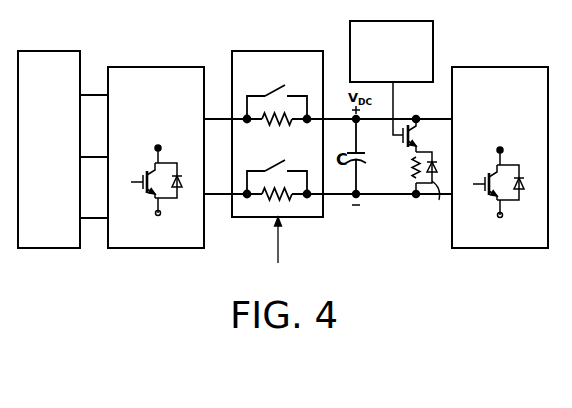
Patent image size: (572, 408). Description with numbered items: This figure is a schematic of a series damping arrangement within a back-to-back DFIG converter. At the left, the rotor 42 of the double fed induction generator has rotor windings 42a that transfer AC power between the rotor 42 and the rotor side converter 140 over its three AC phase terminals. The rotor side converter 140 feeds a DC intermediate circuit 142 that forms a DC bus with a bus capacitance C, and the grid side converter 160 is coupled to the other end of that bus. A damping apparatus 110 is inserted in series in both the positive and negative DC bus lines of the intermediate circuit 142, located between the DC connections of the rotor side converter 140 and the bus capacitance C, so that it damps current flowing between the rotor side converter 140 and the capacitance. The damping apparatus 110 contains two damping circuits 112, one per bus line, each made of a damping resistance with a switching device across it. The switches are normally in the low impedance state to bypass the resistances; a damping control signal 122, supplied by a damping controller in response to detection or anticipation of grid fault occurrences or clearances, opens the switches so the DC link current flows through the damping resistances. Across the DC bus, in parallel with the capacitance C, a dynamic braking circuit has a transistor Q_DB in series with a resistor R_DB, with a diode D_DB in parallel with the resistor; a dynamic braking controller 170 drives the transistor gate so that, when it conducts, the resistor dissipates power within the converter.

The rotor 42 is at (48, 51).
The rotor windings 42a is at (95, 52).
The rotor side converter 140 is at (158, 66).
The DC intermediate circuit 142 is at (213, 55).
The damping apparatus 110 is at (281, 51).
The damping circuits 112 is at (250, 91).
The damping control signal 122 is at (278, 251).
The dynamic braking controller 170 is at (350, 37).
The grid side converter 160 is at (500, 67).